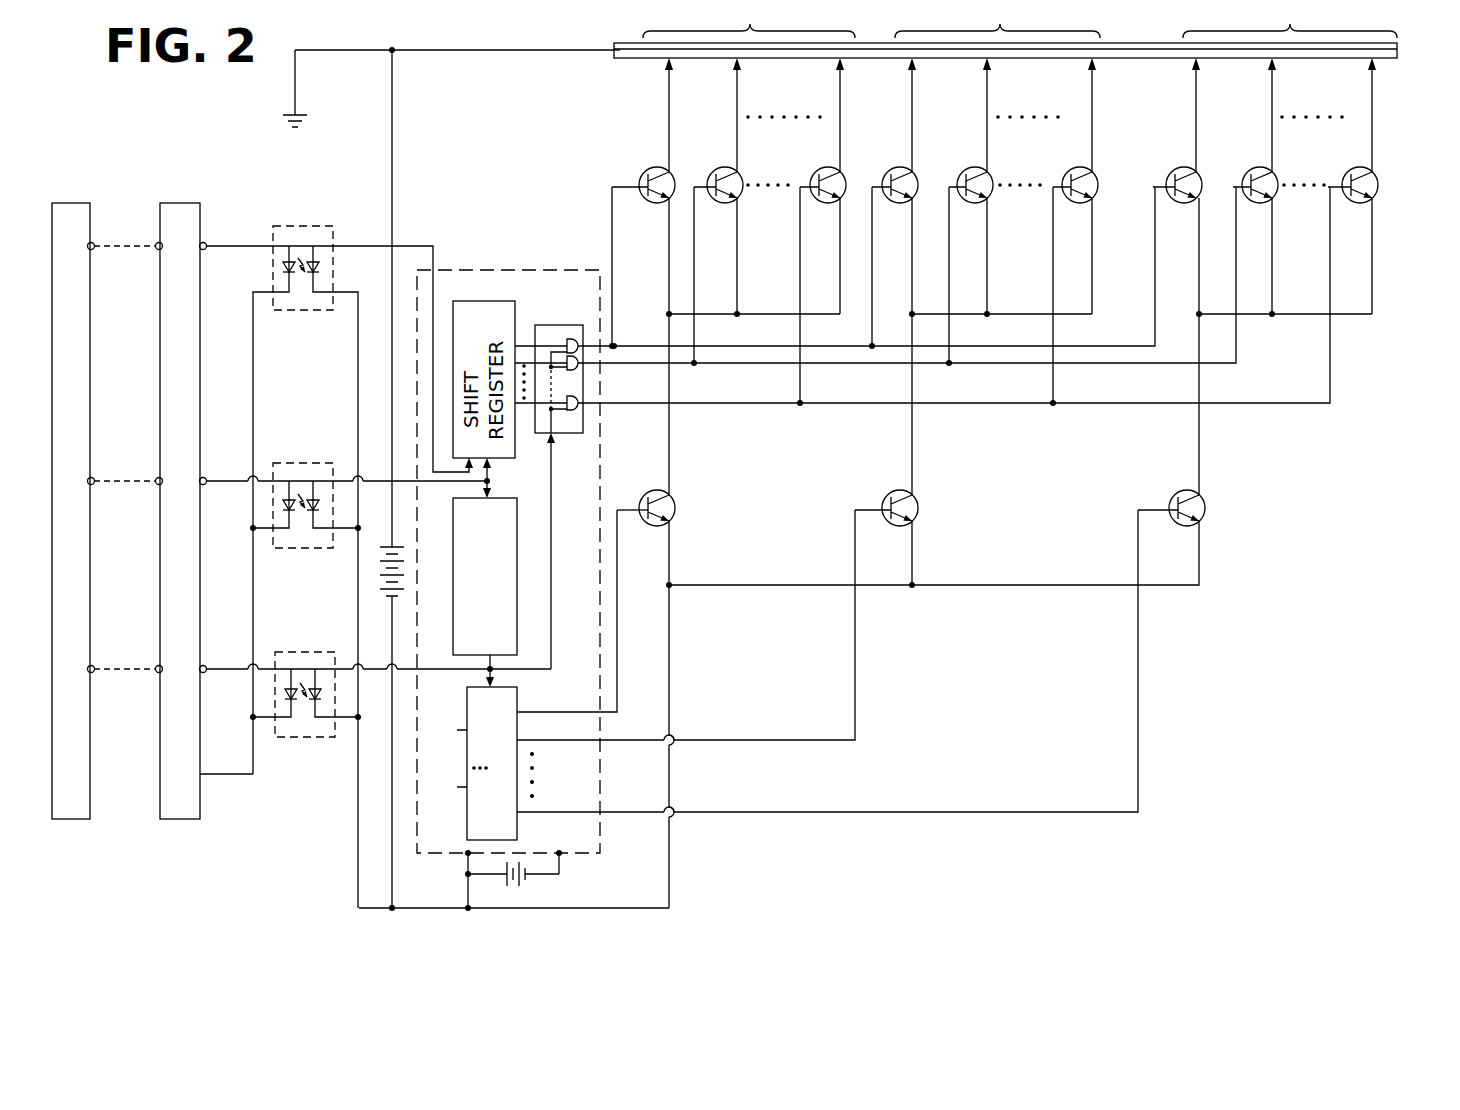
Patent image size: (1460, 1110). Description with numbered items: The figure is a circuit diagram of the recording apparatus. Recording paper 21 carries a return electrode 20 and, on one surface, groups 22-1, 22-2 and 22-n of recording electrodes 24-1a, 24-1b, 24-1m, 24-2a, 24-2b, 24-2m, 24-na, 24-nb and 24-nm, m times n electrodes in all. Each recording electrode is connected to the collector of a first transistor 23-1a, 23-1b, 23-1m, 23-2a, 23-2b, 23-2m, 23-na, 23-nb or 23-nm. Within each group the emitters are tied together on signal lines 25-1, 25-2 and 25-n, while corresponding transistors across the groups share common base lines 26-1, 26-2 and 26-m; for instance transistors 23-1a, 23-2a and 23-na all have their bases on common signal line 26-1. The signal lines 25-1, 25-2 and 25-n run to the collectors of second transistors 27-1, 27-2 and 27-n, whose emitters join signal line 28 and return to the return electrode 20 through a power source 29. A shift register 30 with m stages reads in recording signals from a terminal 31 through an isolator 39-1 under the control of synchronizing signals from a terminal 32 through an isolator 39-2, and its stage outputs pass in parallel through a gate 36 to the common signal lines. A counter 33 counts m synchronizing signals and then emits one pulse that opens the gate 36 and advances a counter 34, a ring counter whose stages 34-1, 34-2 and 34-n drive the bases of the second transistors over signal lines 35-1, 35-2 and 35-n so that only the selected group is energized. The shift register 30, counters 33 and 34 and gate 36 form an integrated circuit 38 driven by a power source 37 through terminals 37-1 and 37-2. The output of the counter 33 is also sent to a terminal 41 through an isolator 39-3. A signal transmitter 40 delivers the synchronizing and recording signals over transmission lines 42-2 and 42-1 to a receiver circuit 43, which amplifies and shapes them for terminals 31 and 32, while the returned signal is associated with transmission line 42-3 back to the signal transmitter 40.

The return electrode 20 is at (1140, 43).
The recording paper 21 is at (627, 60).
The group of recording electrodes 22-1 is at (749, 21).
The group of recording electrodes 22-2 is at (997, 21).
The group of recording electrodes 22-n is at (1290, 21).
The first transistor 23-1a is at (664, 168).
The first transistor 23-1b is at (733, 168).
The first transistor 23-1m is at (836, 168).
The first transistor 23-2a is at (907, 168).
The first transistor 23-2b is at (984, 168).
The first transistor 23-2m is at (1089, 168).
The first transistor 23-na is at (1192, 168).
The first transistor 23-nb is at (1268, 168).
The first transistor 23-nm is at (1368, 168).
The recording electrode 24-1a is at (669, 112).
The recording electrode 24-1b is at (740, 92).
The recording electrode 24-1m is at (862, 97).
The recording electrode 24-2a is at (912, 112).
The recording electrode 24-2b is at (990, 88).
The recording electrode 24-2m is at (1094, 95).
The recording electrode 24-na is at (1198, 102).
The recording electrode 24-nb is at (1274, 92).
The recording electrode 24-nm is at (1374, 110).
The signal line 25-1 is at (669, 433).
The signal line 25-2 is at (912, 433).
The signal line 25-n is at (1199, 433).
The common signal line 26-1 is at (1100, 343).
The common signal line 26-2 is at (1067, 364).
The common signal line 26-m is at (1133, 405).
The second transistor 27-1 is at (675, 498).
The second transistor 27-2 is at (918, 498).
The second transistor 27-n is at (1205, 498).
The signal line 28 is at (1025, 587).
The power source 29 is at (408, 548).
The shift register 30 is at (483, 300).
The terminal 31 is at (207, 244).
The terminal 32 is at (207, 479).
The counter 33 is at (519, 505).
The counter 34 is at (458, 770).
The stage of counter 34-1 is at (519, 715).
The stage of counter 34-2 is at (519, 742).
The stage of counter 34-n is at (519, 818).
The signal line 35-1 is at (617, 633).
The signal line 35-2 is at (855, 640).
The signal line 35-n is at (1138, 640).
The gate 36 is at (553, 325).
The power source 37 is at (520, 886).
The terminal 37-1 is at (560, 856).
The terminal 37-2 is at (468, 856).
The integrated circuit 38 is at (602, 838).
The isolator 39-1 is at (302, 226).
The isolator 39-2 is at (305, 463).
The isolator 39-3 is at (305, 652).
The signal transmitter 40 is at (70, 819).
The terminal 41 is at (207, 667).
The transmission line 42-1 is at (124, 249).
The transmission line 42-2 is at (124, 484).
The transmission line 42-3 is at (124, 672).
The receiver circuit 43 is at (180, 819).